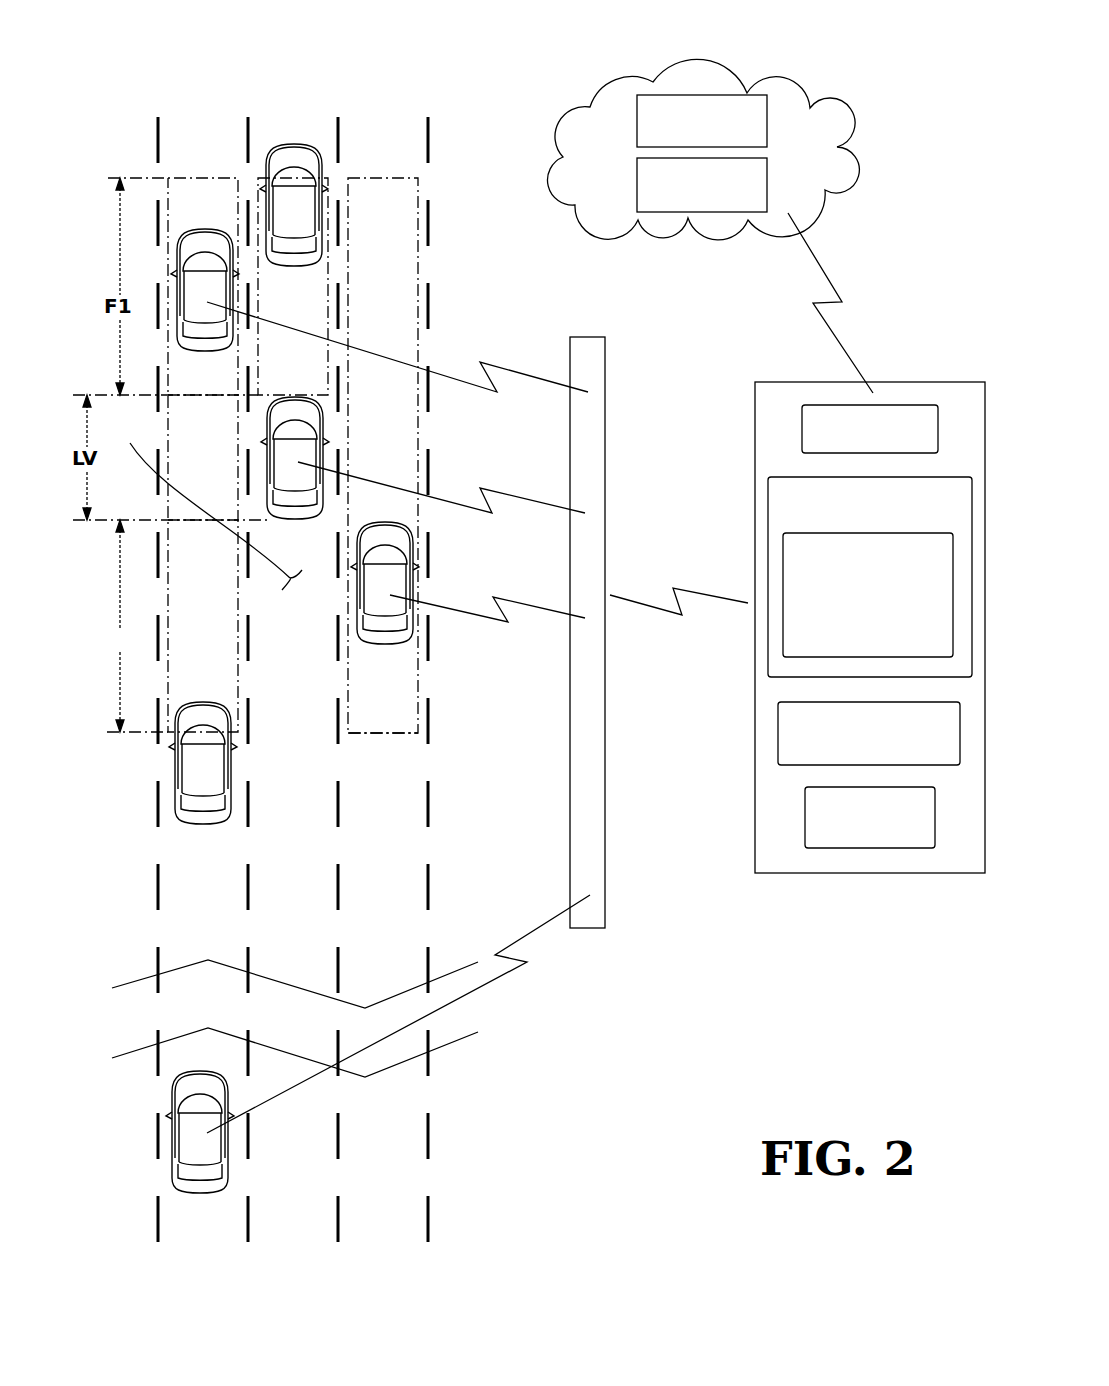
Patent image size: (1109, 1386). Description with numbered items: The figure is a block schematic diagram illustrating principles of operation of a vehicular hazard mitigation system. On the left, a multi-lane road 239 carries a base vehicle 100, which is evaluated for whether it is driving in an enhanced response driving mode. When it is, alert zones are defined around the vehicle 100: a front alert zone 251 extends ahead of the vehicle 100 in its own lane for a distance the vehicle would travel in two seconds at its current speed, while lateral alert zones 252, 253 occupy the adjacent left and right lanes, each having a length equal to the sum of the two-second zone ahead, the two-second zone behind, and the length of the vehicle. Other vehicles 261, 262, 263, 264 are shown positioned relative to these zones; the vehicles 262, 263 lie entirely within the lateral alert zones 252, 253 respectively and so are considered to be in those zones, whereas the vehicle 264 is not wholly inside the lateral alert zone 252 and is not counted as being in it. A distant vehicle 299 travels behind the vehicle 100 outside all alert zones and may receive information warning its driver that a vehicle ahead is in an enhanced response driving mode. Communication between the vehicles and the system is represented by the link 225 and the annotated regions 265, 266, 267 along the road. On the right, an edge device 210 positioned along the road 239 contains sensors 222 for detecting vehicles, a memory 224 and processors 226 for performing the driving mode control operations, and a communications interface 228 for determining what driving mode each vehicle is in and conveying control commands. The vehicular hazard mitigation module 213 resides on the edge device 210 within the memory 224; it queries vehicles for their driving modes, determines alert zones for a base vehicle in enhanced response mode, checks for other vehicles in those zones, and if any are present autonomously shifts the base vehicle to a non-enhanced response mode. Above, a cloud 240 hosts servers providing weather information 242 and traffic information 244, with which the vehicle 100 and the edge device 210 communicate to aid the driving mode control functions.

The vehicle 100 is at (306, 458).
The edge device 210 is at (755, 408).
The vehicular hazard mitigation module 213 is at (783, 580).
The sensors 222 is at (805, 820).
The memory 224 is at (768, 517).
The network 225 is at (580, 840).
The processors 226 is at (802, 428).
The communications interface 228 is at (778, 738).
The road 239 is at (207, 503).
The cloud 240 is at (715, 62).
The weather information 242 is at (843, 138).
The traffic information 244 is at (823, 190).
The front alert zone 251 is at (260, 200).
The lateral alert zone 252 is at (212, 193).
The lateral alert zone 253 is at (390, 205).
The other vehicle 261 is at (293, 200).
The other vehicle 262 is at (190, 292).
The other vehicle 263 is at (402, 608).
The other vehicle 264 is at (200, 787).
The rear lane region 265 is at (277, 628).
The roadway lanes 266 is at (193, 838).
The right lane rear region 267 is at (393, 755).
The distant vehicle 299 is at (198, 1152).